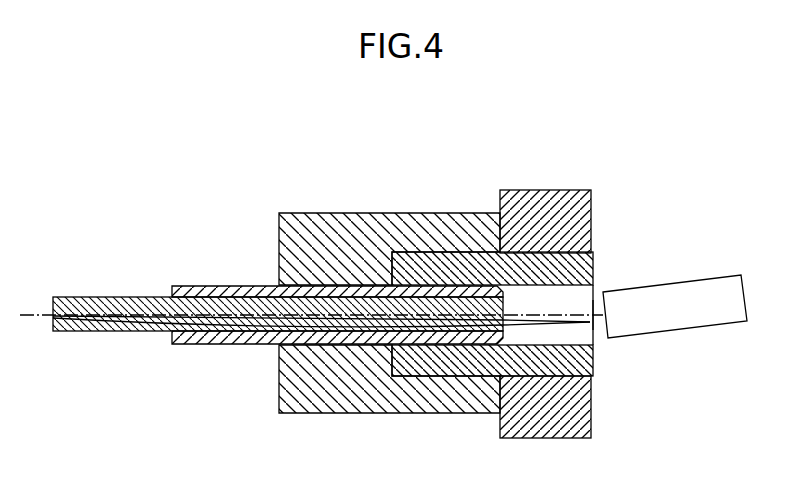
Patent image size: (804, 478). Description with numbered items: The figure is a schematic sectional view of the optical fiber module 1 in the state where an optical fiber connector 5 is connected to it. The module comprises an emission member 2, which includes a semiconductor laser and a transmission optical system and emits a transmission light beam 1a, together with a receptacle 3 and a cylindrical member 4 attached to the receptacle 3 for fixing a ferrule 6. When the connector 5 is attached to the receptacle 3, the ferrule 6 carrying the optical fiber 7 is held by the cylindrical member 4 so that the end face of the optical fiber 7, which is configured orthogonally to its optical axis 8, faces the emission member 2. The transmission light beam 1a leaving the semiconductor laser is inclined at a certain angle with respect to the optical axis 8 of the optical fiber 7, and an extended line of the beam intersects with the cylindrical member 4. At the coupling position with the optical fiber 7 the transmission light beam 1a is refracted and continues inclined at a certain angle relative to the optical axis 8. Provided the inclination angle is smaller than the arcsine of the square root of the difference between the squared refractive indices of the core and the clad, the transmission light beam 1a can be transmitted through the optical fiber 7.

The optical fiber module 1 is at (568, 132).
The transmission light beam 1a is at (585, 321).
The emission member 2 is at (673, 293).
The receptacle 3 is at (585, 190).
The cylindrical member 4 is at (463, 253).
The optical fiber connector 5 is at (347, 250).
The ferrule 6 is at (207, 295).
The optical fiber 7 is at (110, 295).
The optical axis 8 is at (33, 317).